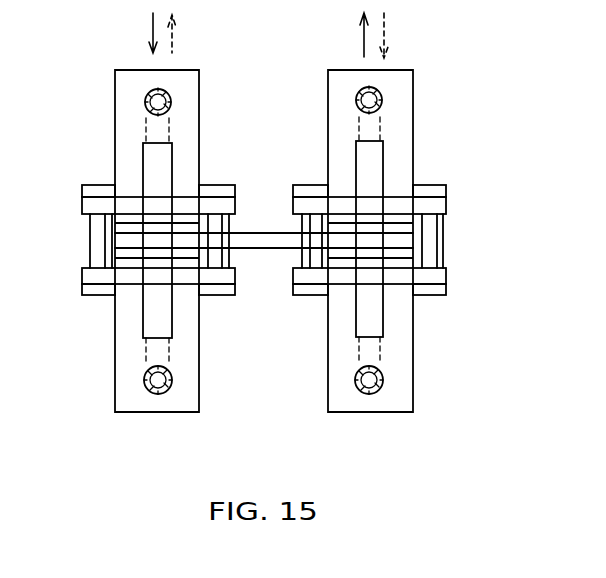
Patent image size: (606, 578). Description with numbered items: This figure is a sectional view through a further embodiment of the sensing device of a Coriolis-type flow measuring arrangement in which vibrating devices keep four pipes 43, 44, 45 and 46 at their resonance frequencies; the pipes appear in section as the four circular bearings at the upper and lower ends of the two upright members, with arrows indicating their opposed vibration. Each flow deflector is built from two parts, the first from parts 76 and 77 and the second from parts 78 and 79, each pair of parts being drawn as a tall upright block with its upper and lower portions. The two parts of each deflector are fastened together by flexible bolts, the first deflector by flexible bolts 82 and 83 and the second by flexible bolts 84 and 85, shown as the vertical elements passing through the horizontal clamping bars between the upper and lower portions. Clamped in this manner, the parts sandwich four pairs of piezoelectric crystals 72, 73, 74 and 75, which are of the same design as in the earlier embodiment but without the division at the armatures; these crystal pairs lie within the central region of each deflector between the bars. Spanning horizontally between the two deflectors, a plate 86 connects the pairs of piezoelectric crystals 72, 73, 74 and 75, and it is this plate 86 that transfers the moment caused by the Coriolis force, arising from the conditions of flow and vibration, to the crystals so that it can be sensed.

The pipe 43 is at (377, 395).
The pipe 44 is at (167, 393).
The pipe 45 is at (355, 95).
The pipe 46 is at (170, 90).
The pair of piezoelectric crystals 72 is at (178, 222).
The pair of piezoelectric crystals 73 is at (160, 290).
The pair of piezoelectric crystals 74 is at (377, 222).
The pair of piezoelectric crystals 75 is at (368, 260).
The part of flow deflector 76 is at (115, 85).
The part of flow deflector 77 is at (120, 382).
The part of flow deflector 78 is at (405, 85).
The part of flow deflector 79 is at (405, 378).
The flexible bolt 82 is at (95, 232).
The flexible bolt 83 is at (222, 222).
The flexible bolt 84 is at (432, 235).
The flexible bolt 85 is at (300, 223).
The plate 86 is at (276, 250).